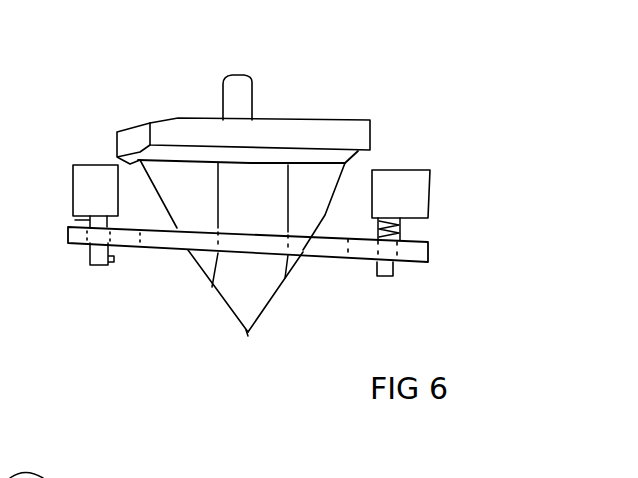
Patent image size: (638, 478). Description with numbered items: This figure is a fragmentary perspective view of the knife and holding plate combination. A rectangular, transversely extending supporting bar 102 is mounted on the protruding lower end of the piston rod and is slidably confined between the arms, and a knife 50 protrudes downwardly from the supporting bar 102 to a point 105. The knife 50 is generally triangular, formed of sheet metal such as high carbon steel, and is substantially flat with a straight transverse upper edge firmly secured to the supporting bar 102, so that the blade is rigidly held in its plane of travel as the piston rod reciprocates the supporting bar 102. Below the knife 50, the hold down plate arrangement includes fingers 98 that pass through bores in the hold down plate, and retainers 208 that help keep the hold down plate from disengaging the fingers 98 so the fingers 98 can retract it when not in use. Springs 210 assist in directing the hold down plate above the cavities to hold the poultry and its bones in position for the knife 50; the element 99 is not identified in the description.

The supporting bar 102 is at (282, 127).
The knife 50 is at (317, 182).
The point 105 is at (247, 336).
The retainers 208 is at (370, 266).
The mounting block 99 is at (418, 188).
The springs 210 is at (406, 230).
The fingers 98 is at (394, 271).